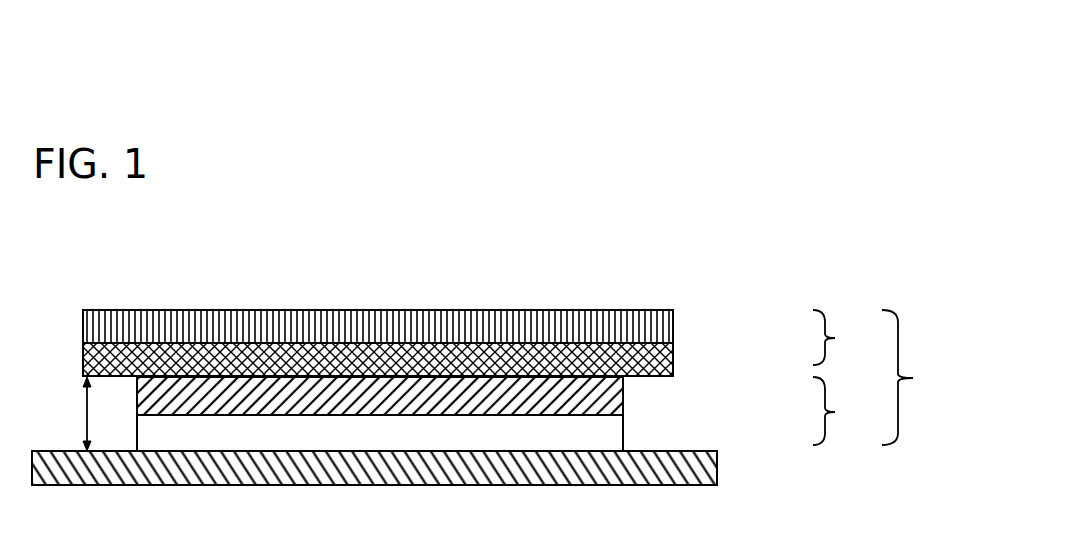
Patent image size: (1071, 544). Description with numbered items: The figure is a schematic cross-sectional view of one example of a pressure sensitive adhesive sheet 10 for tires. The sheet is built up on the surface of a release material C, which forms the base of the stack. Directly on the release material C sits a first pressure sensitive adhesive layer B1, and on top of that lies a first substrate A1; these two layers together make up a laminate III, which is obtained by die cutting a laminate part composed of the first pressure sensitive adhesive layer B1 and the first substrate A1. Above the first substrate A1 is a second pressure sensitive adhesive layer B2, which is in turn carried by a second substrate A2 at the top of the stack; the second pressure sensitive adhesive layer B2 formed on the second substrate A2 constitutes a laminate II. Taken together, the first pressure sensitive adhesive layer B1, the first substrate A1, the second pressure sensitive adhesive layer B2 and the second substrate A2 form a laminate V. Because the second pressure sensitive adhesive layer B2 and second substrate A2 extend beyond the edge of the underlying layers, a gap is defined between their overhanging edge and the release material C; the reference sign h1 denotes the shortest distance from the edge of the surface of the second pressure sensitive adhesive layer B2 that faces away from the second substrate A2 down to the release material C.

The pressure sensitive adhesive sheet for tires 10 is at (610, 300).
The second substrate A2 is at (657, 323).
The second pressure sensitive adhesive layer B2 is at (677, 353).
The first substrate A1 is at (597, 400).
The first pressure sensitive adhesive layer B1 is at (597, 437).
The release material C is at (693, 467).
The shortest distance h1 is at (68, 414).
The laminate II is at (839, 337).
The laminate III is at (844, 411).
The laminate V is at (915, 377).